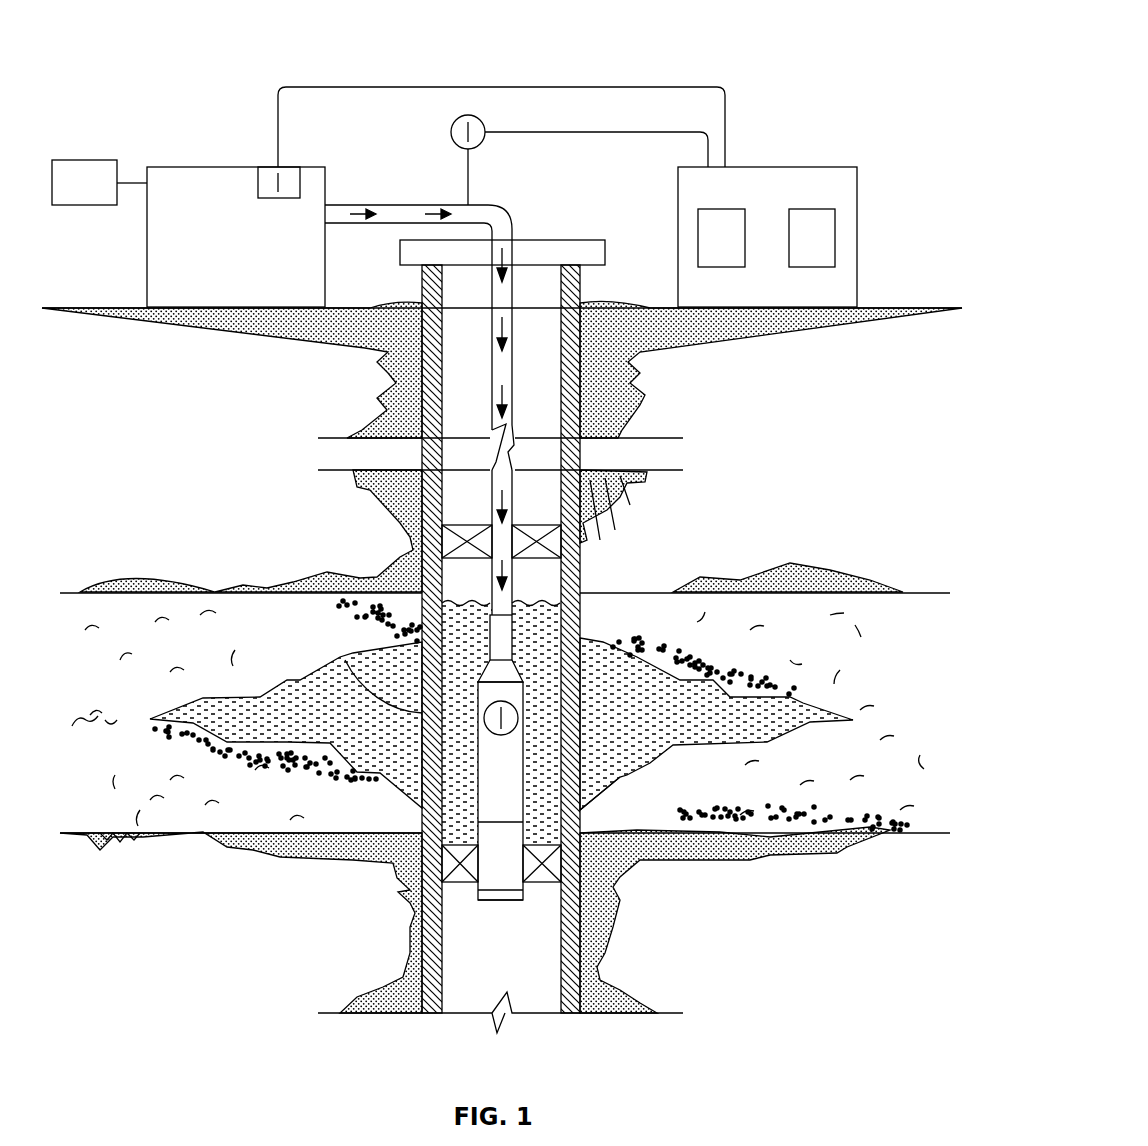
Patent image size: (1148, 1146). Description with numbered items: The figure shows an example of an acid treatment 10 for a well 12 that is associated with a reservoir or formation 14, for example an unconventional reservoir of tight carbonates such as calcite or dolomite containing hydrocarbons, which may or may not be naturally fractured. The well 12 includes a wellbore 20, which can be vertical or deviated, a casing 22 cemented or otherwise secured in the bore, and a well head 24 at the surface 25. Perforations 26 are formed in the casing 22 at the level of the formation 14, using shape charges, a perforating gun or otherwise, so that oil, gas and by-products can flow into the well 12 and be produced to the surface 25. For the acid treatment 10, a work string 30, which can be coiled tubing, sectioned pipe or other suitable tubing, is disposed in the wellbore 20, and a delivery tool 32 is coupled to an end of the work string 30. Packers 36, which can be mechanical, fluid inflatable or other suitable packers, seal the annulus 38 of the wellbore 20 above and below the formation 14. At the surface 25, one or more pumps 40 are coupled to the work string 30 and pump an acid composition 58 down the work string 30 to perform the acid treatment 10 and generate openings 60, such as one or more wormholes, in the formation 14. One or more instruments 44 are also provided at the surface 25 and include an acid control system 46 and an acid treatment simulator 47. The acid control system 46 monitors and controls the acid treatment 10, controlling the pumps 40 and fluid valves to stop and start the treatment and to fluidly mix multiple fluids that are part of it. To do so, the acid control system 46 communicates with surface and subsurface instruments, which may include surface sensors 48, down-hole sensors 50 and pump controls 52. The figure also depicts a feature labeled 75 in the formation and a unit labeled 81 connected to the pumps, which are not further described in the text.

The acid treatment 10 is at (728, 50).
The well 12 is at (530, 216).
The formation 14 is at (792, 650).
The wellbore 20 is at (597, 340).
The casing 22 is at (442, 362).
The well head 24 is at (557, 240).
The surface 25 is at (622, 305).
The perforations 26 is at (345, 660).
The work string 30 is at (512, 490).
The delivery tool 32 is at (488, 912).
The packers 36 is at (549, 563).
The annulus 38 is at (527, 422).
The pumps 40 is at (207, 167).
The instruments 44 is at (800, 167).
The acid control system 46 is at (709, 248).
The acid treatment simulator 47 is at (799, 248).
The surface sensors 48 is at (452, 125).
The down-hole sensors 50 is at (503, 735).
The pump controls 52 is at (283, 200).
The acid composition 58 is at (360, 206).
The openings 60 is at (255, 695).
The natural fracture 75 is at (103, 720).
The fluid source 81 is at (99, 182).